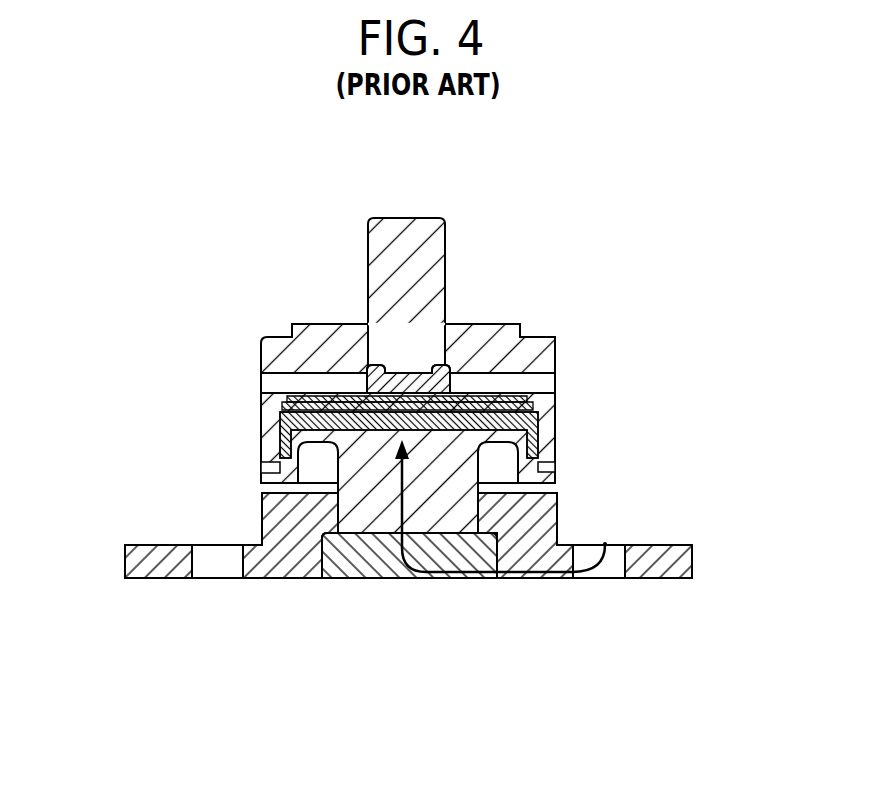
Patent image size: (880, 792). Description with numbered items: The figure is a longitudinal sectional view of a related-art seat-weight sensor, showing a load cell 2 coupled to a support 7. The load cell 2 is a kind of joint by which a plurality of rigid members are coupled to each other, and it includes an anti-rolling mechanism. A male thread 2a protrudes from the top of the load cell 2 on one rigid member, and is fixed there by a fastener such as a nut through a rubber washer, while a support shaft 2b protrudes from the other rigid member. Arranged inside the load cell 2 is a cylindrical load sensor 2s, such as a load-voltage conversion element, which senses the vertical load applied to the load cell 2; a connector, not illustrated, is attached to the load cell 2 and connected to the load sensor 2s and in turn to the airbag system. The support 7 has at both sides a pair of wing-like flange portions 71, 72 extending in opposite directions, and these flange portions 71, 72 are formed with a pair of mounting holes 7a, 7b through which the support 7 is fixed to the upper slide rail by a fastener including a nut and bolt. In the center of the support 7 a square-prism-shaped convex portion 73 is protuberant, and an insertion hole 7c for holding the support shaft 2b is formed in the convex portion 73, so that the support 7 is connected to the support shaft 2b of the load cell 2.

The load cell 2 is at (317, 321).
The male thread 2a is at (410, 218).
The support shaft 2b is at (447, 475).
The load sensor 2s is at (483, 396).
The support 7 is at (123, 543).
The mounting hole 7a is at (592, 543).
The mounting hole 7b is at (222, 562).
The insertion hole 7c is at (355, 513).
The flange portion 71 is at (692, 543).
The flange portion 72 is at (158, 545).
The convex portion 73 is at (258, 497).